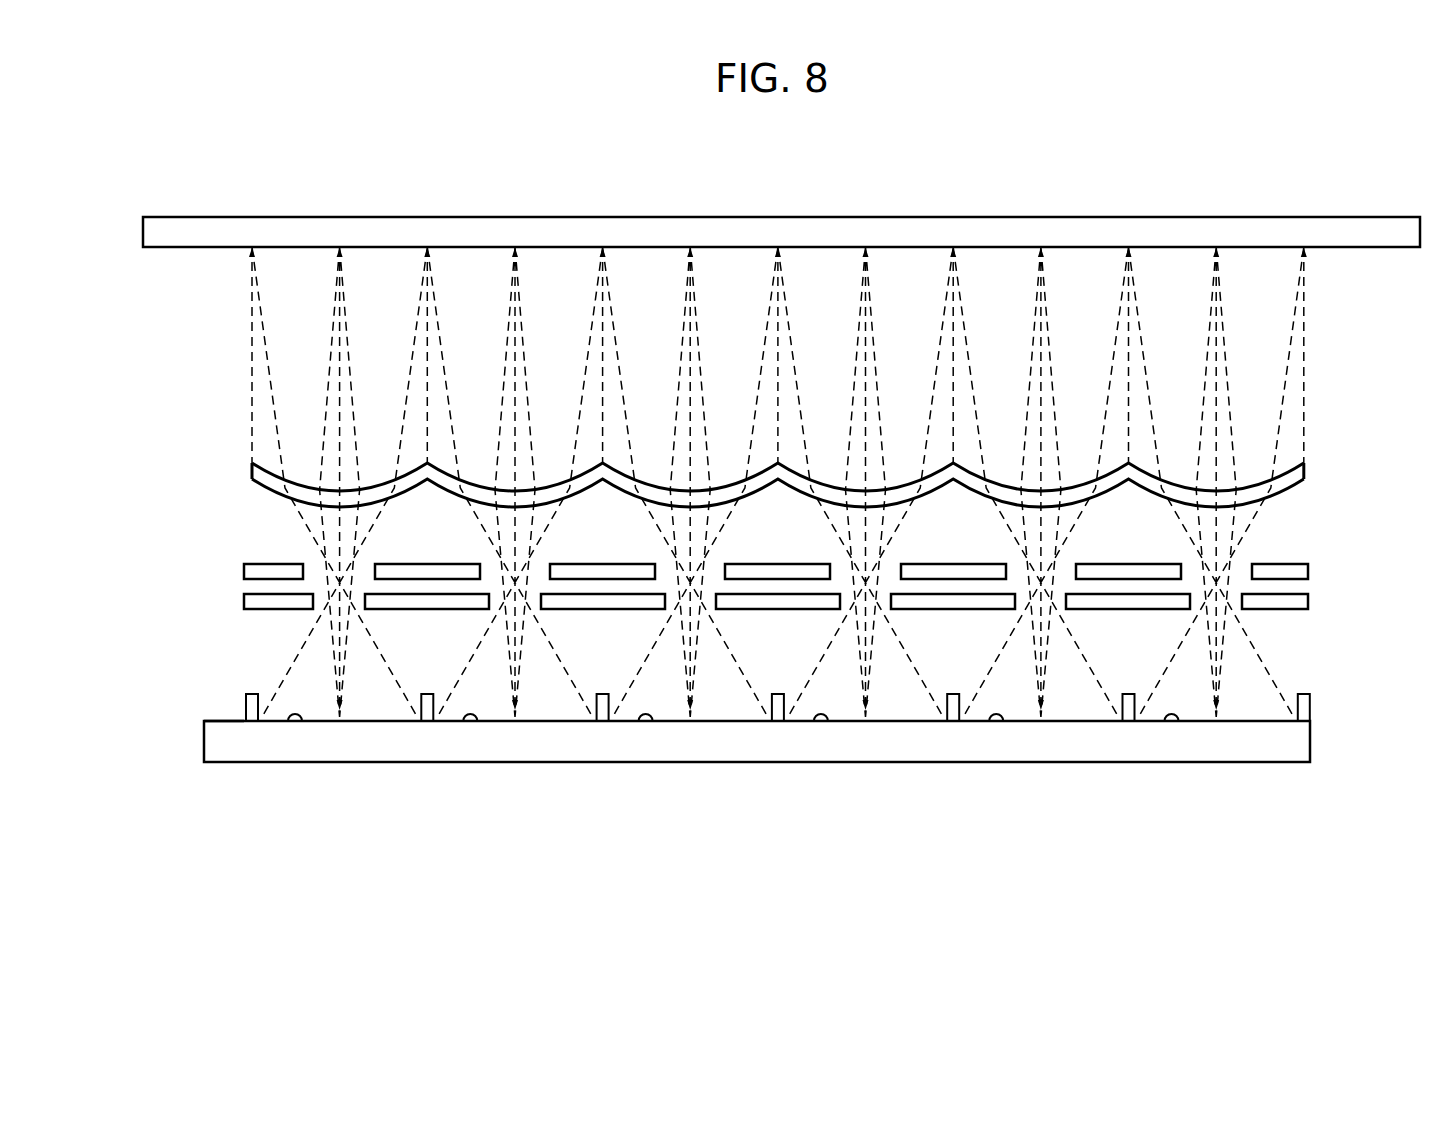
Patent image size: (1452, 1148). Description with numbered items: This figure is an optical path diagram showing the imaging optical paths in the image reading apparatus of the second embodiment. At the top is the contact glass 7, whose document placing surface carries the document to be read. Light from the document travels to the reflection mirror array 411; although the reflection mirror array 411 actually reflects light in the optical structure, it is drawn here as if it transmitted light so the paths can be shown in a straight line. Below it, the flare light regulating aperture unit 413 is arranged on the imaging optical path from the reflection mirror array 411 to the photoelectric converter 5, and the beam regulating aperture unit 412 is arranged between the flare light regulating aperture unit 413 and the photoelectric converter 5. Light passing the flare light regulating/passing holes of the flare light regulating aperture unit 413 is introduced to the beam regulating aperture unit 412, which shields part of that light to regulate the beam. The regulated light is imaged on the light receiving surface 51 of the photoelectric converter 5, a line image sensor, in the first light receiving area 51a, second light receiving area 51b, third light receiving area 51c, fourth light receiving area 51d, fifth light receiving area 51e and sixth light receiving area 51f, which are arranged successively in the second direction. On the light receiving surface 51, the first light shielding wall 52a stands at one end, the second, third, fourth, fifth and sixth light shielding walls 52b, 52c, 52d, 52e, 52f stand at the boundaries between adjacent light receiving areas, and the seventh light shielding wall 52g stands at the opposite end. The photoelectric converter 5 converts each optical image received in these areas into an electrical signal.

The contact glass 7 is at (457, 230).
The reflection mirror array 411 is at (1318, 466).
The flare light regulating aperture unit 413 is at (1310, 571).
The beam regulating aperture unit 412 is at (1310, 601).
The photoelectric converter 5 is at (1267, 751).
The light receiving surface 51 is at (220, 721).
The first light receiving area 51a is at (290, 722).
The second light receiving area 51b is at (465, 722).
The third light receiving area 51c is at (641, 722).
The fourth light receiving area 51d is at (816, 722).
The fifth light receiving area 51e is at (991, 722).
The sixth light receiving area 51f is at (1166, 722).
The first light shielding wall 52a is at (249, 712).
The second light shielding wall 52b is at (424, 712).
The third light shielding wall 52c is at (600, 712).
The fourth light shielding wall 52d is at (775, 712).
The fifth light shielding wall 52e is at (950, 712).
The sixth light shielding wall 52f is at (1126, 712).
The seventh light shielding wall 52g is at (1310, 707).